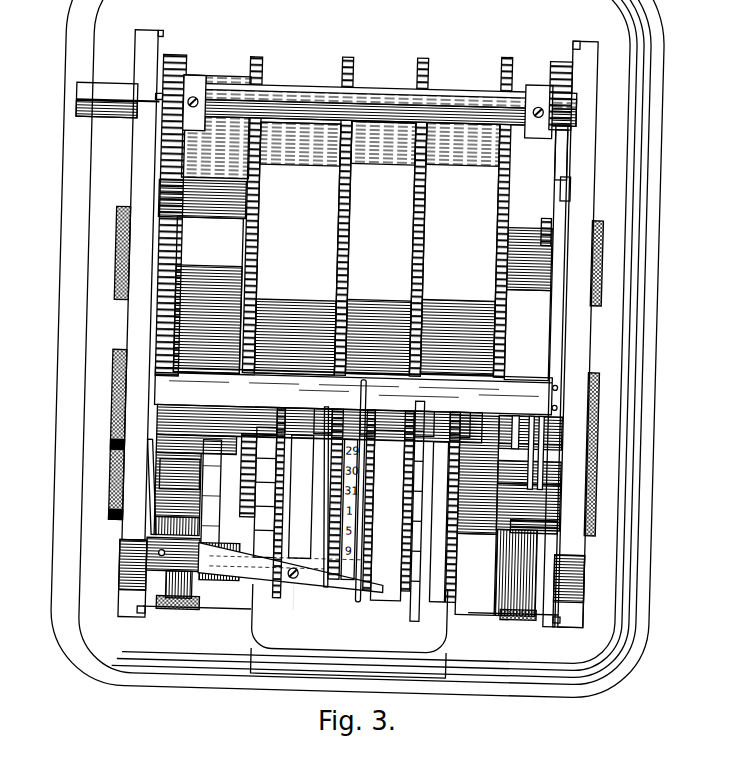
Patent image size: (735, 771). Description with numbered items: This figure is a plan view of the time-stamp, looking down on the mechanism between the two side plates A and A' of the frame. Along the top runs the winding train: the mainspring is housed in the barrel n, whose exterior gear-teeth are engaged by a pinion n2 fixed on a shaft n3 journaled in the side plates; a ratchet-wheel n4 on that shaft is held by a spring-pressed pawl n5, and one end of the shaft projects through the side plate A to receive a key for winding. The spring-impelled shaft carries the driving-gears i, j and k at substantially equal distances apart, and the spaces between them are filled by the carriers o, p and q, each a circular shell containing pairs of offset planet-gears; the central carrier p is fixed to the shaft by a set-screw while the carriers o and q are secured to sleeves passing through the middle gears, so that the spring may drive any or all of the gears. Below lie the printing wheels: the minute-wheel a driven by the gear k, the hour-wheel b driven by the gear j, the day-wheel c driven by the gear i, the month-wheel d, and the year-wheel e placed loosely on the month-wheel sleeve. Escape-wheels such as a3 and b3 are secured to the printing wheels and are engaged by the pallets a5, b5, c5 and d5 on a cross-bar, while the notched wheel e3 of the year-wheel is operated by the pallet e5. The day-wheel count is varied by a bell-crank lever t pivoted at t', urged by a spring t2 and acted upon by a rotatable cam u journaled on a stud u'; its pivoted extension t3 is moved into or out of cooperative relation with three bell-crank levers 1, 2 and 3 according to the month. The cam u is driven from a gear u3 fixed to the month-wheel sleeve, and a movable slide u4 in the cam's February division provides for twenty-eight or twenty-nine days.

The pinion n2 is at (176, 61).
The driving-gear k is at (250, 64).
The driving-gear i is at (342, 58).
The driving-gear j is at (420, 56).
The shaft n3 is at (378, 92).
The ratchet-wheel n4 is at (550, 57).
The spring-pressed pawl n5 is at (555, 147).
The barrel n is at (202, 223).
The carrier o is at (297, 248).
The carrier p is at (380, 248).
The carrier q is at (460, 248).
The rotatable cam u is at (183, 477).
The stud u' is at (261, 407).
The pallet e5 is at (286, 435).
The pallet d5 is at (322, 434).
The pallet c5 is at (369, 432).
The pallet b5 is at (426, 431).
The pallet a5 is at (464, 430).
The gear u3 is at (202, 440).
The movable slide u4 is at (204, 499).
The spring t2 is at (157, 505).
The side plate A is at (111, 577).
The pivot t' is at (139, 571).
The toothed or notched wheel e3 is at (244, 579).
The bell-crank lever t is at (290, 596).
The extension t3 is at (292, 600).
The bell-crank lever 1 is at (317, 600).
The bell-crank lever 2 is at (329, 600).
The bell-crank lever 3 is at (340, 604).
The day-wheel c is at (366, 604).
The hour-wheel b is at (425, 600).
The escape-wheel b3 is at (428, 600).
The minute-wheel a is at (459, 600).
The escape-wheel a3 is at (505, 555).
The side plate A' is at (634, 336).
The year-wheel e is at (267, 614).
The month-wheel d is at (309, 618).